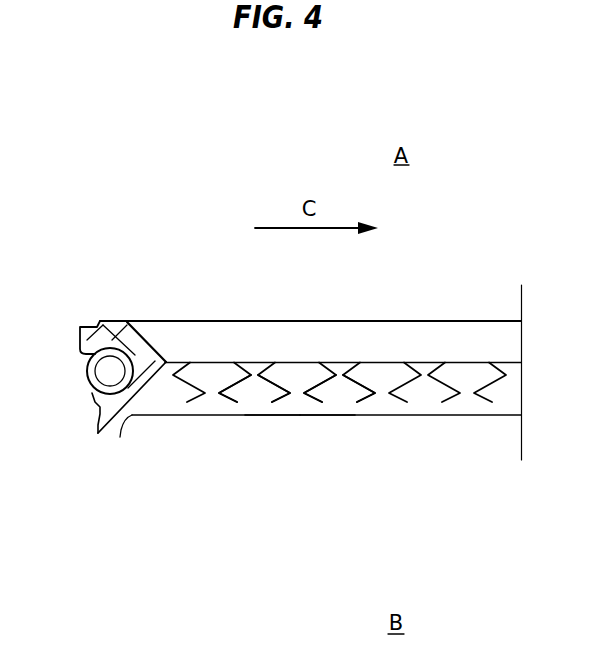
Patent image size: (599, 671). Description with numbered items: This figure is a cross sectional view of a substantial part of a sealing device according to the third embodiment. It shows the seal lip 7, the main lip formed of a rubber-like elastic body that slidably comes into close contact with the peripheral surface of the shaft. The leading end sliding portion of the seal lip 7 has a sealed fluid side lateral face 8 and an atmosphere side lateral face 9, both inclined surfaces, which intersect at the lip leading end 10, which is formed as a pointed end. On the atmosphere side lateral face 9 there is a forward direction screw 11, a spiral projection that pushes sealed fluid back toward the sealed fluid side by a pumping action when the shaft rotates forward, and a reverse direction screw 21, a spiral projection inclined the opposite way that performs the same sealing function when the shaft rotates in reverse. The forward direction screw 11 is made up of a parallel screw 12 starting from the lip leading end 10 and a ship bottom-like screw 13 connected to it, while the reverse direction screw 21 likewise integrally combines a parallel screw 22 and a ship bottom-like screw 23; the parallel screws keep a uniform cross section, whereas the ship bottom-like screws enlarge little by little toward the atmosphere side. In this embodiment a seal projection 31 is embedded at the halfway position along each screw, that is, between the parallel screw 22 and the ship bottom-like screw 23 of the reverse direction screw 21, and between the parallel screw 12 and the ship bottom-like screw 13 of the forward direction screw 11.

The seal lip 7 is at (112, 330).
The sealed fluid side lateral face 8 is at (153, 340).
The atmosphere side lateral face 9 is at (147, 388).
The lip leading end 10 is at (383, 368).
The forward direction screw 11 is at (277, 418).
The parallel screw 12 is at (264, 364).
The ship bottom-like screw 13 is at (288, 396).
The reverse direction screw 21 is at (325, 418).
The parallel screw 22 is at (330, 366).
The ship bottom-like screw 23 is at (307, 398).
The seal projection 31 is at (262, 394).